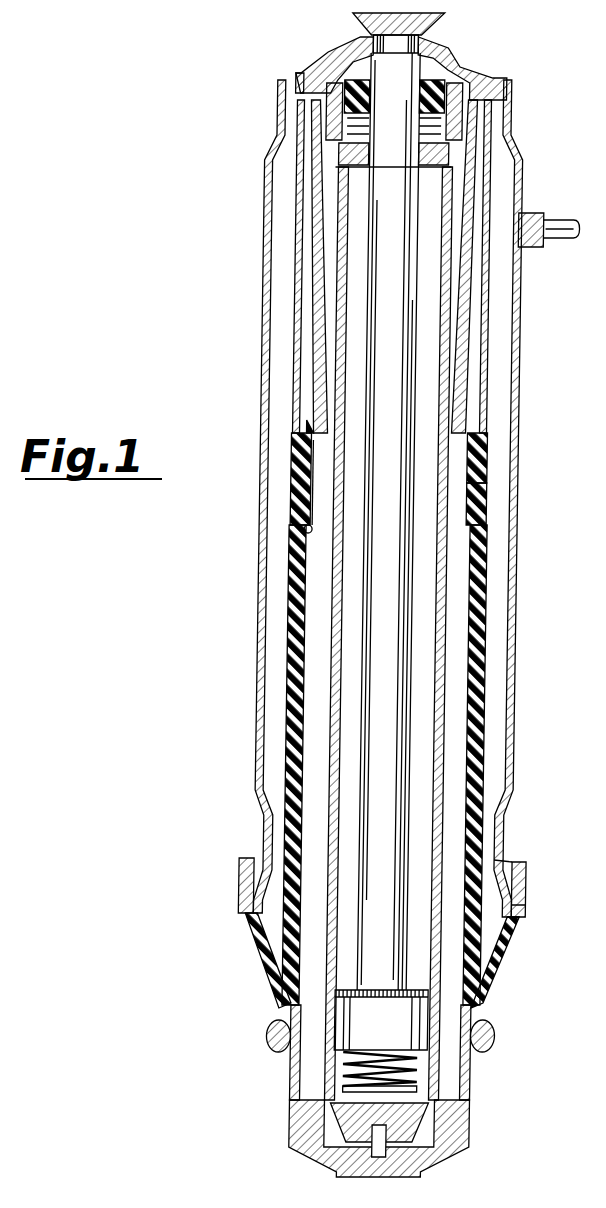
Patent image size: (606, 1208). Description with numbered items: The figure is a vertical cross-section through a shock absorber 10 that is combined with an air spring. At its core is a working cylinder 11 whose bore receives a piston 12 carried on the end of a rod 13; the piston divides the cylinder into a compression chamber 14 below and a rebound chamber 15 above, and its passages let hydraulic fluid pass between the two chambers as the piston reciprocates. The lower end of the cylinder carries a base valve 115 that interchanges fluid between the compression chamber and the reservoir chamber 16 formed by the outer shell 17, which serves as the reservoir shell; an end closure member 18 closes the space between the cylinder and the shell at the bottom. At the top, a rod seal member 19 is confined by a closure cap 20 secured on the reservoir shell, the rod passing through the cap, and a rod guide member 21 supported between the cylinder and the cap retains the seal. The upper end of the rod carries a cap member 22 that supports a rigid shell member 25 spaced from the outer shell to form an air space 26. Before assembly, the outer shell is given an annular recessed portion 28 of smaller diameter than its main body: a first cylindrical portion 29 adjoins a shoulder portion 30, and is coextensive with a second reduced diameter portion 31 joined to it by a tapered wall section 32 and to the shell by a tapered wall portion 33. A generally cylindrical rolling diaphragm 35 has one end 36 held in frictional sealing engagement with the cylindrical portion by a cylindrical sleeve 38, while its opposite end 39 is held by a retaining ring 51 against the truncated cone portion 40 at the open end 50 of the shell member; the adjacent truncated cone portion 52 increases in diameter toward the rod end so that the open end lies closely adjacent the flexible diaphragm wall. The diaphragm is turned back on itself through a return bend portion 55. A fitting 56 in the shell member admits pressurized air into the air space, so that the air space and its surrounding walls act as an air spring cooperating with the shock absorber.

The shock absorber 10 is at (384, 598).
The working cylinder 11 is at (325, 612).
The piston 12 is at (366, 1032).
The rod 13 is at (381, 663).
The compression chamber 14 is at (347, 1072).
The rebound chamber 15 is at (343, 677).
The reservoir chamber 16 is at (320, 722).
The outer shell 17 is at (309, 744).
The end closure member 18 is at (308, 1108).
The rod seal member 19 is at (334, 77).
The closure cap 20 is at (324, 85).
The rod guide member 21 is at (345, 160).
The cap member 22 is at (289, 88).
The rigid shell member 25 is at (262, 200).
The air space 26 is at (288, 232).
The annular recessed portion 28 is at (314, 341).
The first cylindrical portion 29 is at (318, 482).
The shoulder portion 30 is at (299, 530).
The second reduced diameter portion 31 is at (314, 356).
The tapered wall section 32 is at (304, 405).
The tapered wall portion 33 is at (313, 262).
The rolling diaphragm 35 is at (490, 592).
The diaphragm end 36 is at (473, 437).
The cylindrical sleeve 38 is at (489, 512).
The opposite diaphragm end 39 is at (514, 867).
The truncated cone portion 40 is at (494, 885).
The open end 50 is at (496, 983).
The retaining ring 51 is at (528, 905).
The truncated cone portion 52 is at (505, 945).
The return bend portion 55 is at (504, 1042).
The fitting 56 is at (530, 245).
The base valve 115 is at (380, 1148).